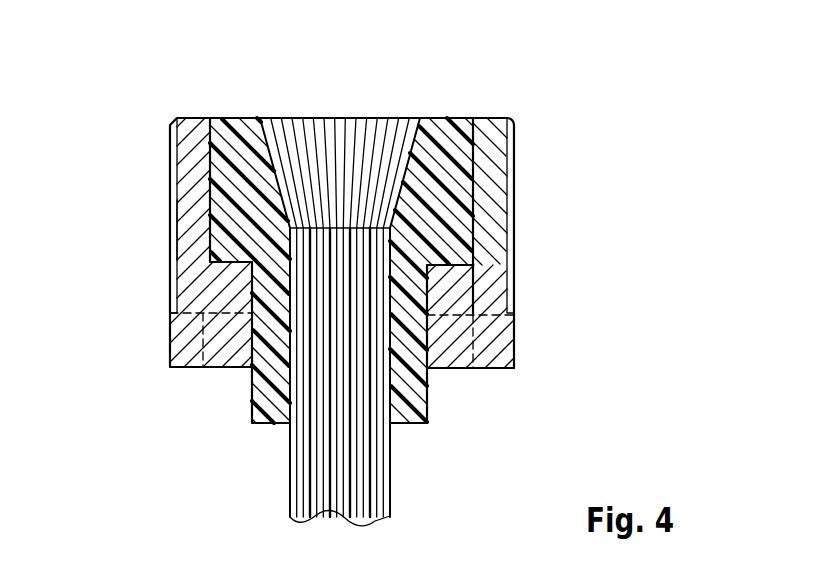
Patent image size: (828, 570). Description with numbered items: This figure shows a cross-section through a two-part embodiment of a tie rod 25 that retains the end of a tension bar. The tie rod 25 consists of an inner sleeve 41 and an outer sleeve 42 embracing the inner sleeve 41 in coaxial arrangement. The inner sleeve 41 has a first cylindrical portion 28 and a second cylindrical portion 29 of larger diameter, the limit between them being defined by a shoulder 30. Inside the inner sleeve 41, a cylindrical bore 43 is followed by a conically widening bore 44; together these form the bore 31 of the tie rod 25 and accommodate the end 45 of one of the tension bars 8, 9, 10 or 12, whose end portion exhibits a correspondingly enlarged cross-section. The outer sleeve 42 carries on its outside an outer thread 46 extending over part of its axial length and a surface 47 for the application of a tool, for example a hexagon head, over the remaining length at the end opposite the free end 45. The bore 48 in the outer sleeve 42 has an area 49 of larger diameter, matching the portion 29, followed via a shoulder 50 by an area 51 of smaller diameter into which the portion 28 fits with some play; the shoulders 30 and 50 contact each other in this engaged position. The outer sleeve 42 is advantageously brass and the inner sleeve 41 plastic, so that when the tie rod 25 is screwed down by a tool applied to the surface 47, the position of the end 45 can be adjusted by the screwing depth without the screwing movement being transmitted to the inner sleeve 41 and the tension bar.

The tension bar 8 is at (266, 386).
The tension bar 9 is at (266, 386).
The tension bar 10 is at (266, 386).
The tension bar 12 is at (310, 485).
The tie rod 25 is at (555, 196).
The first cylindrical portion 28 is at (275, 403).
The second cylindrical portion 29 is at (237, 197).
The shoulder 30 is at (232, 267).
The bore 31 is at (398, 438).
The inner sleeve 41 is at (258, 168).
The outer sleeve 42 is at (160, 227).
The cylindrical bore 43 is at (392, 393).
The conically widening bore 44 is at (415, 150).
The end 45 is at (345, 200).
The outer thread 46 is at (512, 148).
The surface for the application of a tool 47 is at (500, 372).
The bore 48 is at (225, 141).
The area of larger diameter 49 is at (470, 233).
The shoulder 50 is at (452, 265).
The area of smaller diameter 51 is at (458, 297).